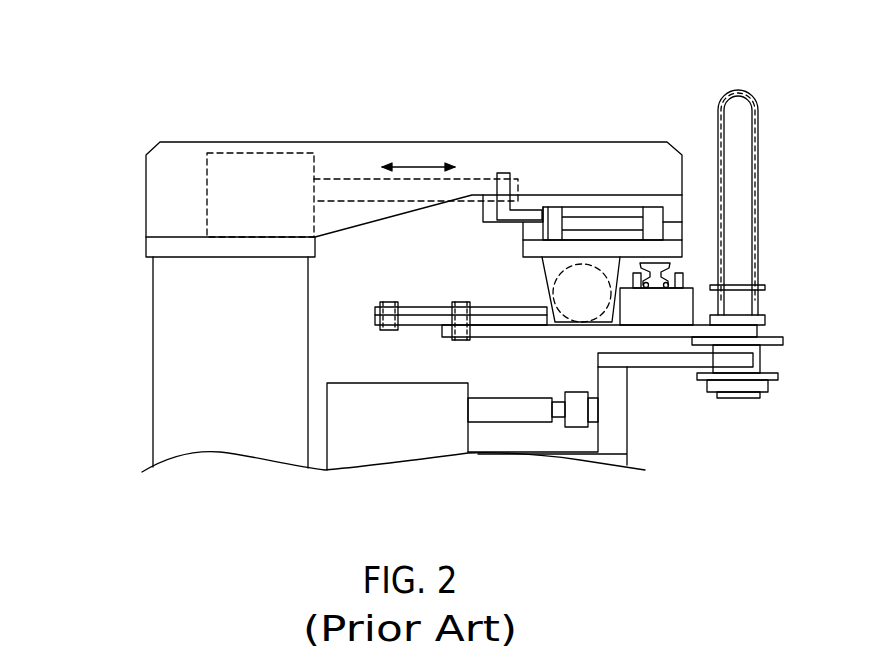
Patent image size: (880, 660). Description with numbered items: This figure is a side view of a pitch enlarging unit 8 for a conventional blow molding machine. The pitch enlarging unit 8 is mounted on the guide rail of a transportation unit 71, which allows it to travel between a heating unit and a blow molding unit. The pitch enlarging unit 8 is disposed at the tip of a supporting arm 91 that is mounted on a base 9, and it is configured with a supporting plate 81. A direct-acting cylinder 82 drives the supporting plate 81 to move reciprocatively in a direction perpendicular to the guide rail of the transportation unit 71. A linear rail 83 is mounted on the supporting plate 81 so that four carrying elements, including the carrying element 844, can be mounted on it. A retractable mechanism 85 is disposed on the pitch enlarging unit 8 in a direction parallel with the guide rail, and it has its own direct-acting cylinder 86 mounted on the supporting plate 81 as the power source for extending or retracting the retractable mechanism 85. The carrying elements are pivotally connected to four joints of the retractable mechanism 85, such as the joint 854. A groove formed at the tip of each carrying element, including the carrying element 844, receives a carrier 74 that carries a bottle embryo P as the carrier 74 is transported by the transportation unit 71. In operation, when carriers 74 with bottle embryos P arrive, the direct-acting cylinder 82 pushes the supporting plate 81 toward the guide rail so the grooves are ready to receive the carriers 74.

The base 9 is at (163, 353).
The supporting arm 91 is at (473, 142).
The direct-acting cylinder 82 is at (250, 153).
The supporting plate 81 is at (537, 253).
The pitch enlarging unit 8 is at (488, 259).
The direct-acting cylinder 86 is at (552, 290).
The linear rail 83 is at (683, 265).
The bottle embryo P is at (755, 102).
The retractable mechanism 85 is at (408, 330).
The joint 854 is at (463, 338).
The carrying element 844 is at (557, 328).
The carrier 74 is at (753, 350).
The transportation unit 71 is at (646, 435).